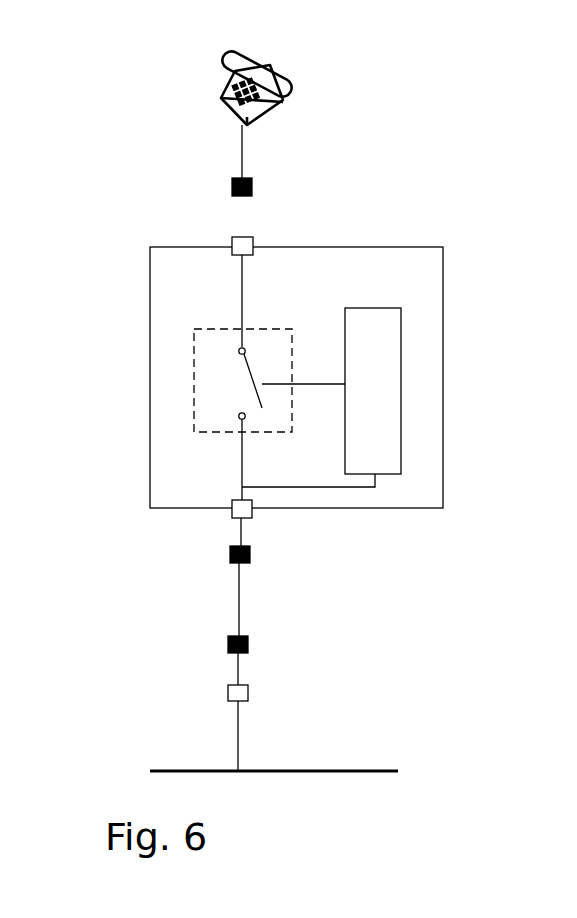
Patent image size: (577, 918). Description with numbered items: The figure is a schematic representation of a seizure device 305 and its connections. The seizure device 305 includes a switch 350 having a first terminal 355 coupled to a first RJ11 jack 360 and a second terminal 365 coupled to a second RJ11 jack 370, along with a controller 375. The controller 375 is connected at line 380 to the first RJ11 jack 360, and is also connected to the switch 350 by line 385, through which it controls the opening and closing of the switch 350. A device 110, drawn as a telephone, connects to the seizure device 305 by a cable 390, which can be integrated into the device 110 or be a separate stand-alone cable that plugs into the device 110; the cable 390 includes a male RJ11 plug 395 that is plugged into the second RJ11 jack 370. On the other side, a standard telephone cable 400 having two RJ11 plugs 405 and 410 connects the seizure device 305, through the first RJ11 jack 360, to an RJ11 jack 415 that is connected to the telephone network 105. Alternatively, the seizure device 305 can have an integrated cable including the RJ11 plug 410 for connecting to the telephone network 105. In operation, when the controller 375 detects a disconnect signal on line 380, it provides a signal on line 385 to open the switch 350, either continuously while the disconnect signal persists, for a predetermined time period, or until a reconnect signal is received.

The telephone network 105 is at (277, 769).
The device 110 is at (280, 72).
The seizure device 305 is at (149, 451).
The switch 350 is at (192, 371).
The first terminal 355 is at (238, 415).
The first RJ11 jack 360 is at (231, 516).
The second terminal 365 is at (239, 348).
The second RJ11 jack 370 is at (255, 242).
The controller 375 is at (402, 345).
The line 380 is at (312, 488).
The line 385 is at (321, 381).
The cable 390 is at (244, 143).
The male RJ11 plug 395 is at (230, 187).
The standard telephone cable 400 is at (236, 590).
The RJ11 plug 405 is at (251, 561).
The RJ11 plug 410 is at (250, 645).
The RJ11 jack 415 is at (227, 692).